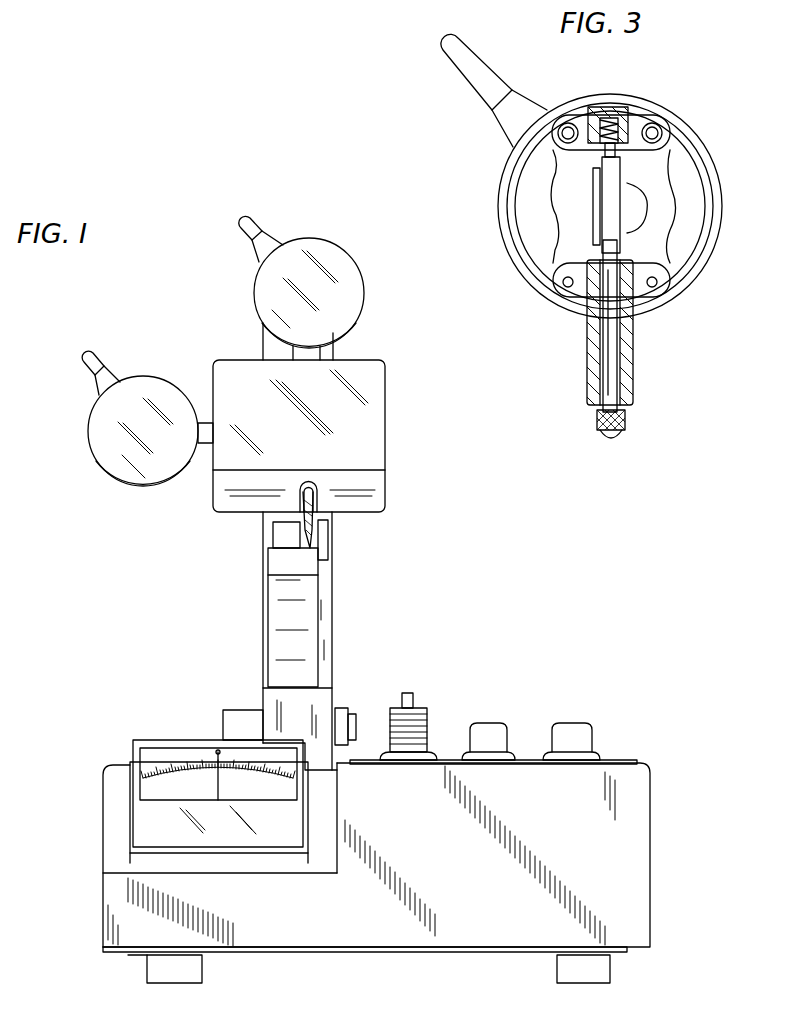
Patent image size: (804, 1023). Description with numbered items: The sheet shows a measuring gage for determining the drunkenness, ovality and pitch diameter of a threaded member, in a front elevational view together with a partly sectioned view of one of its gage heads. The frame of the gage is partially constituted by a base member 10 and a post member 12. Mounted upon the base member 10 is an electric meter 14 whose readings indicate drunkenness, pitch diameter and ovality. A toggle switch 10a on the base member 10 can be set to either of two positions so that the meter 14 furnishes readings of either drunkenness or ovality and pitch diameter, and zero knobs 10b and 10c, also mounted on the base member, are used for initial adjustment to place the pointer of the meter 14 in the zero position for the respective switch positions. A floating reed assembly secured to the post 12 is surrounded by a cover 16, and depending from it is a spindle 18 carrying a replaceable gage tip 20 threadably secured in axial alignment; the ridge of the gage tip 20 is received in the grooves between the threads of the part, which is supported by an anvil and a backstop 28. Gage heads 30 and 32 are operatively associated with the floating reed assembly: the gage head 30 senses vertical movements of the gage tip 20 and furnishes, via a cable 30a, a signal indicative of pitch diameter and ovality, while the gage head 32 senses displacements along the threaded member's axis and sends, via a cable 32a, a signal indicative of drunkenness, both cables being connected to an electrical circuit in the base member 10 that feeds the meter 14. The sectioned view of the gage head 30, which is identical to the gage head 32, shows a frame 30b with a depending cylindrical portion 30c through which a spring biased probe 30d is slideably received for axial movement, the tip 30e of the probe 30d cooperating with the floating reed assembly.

In FIG. 1, the base member 10 is at (625, 848).
In FIG. 1, the toggle switch 10a is at (222, 735).
In FIG. 1, the zero knob 10b is at (485, 733).
In FIG. 1, the zero knob 10c is at (573, 733).
In FIG. 1, the post member 12 is at (313, 703).
In FIG. 1, the electric meter 14 is at (186, 786).
In FIG. 1, the cover 16 is at (363, 432).
In FIG. 1, the spindle 18 is at (312, 500).
In FIG. 1, the gage tip 20 is at (311, 524).
In FIG. 1, the backstop 28 is at (288, 543).
In FIG. 1, the gage head 30 is at (345, 285).
In FIG. 3, the gage head 30 is at (595, 269).
In FIG. 1, the cable 30a is at (256, 218).
In FIG. 3, the cable 30a is at (477, 70).
In FIG. 3, the frame 30b is at (693, 152).
In FIG. 3, the cylindrical portion 30c is at (624, 347).
In FIG. 3, the probe 30d is at (610, 366).
In FIG. 3, the tip 30e is at (613, 441).
In FIG. 1, the gage head 32 is at (150, 413).
In FIG. 1, the cable 32a is at (90, 363).